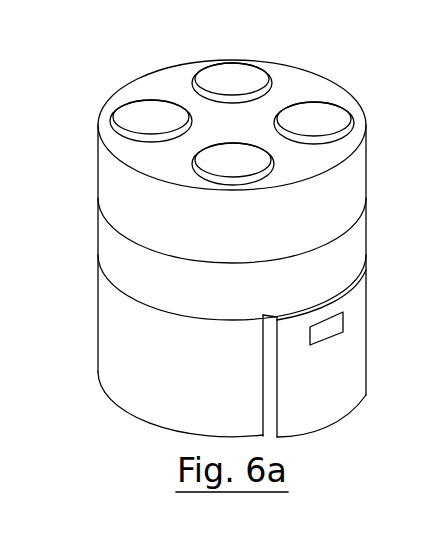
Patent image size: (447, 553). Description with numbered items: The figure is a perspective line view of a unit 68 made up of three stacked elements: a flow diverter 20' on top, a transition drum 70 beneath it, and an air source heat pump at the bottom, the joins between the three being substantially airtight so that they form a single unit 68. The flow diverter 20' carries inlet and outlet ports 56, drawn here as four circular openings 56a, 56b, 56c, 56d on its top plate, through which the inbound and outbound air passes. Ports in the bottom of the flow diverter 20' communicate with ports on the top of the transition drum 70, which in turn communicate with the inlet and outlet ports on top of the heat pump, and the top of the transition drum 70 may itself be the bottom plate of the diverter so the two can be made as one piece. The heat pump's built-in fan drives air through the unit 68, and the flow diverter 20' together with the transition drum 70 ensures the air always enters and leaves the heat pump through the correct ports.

The unit 68 is at (91, 407).
The flow diverter 20' is at (232, 230).
The transition drum 70 is at (232, 287).
The inlet and outlet ports 56 is at (431, 172).
The inlet and outlet port 56a is at (143, 120).
The inlet and outlet port 56b is at (237, 80).
The inlet and outlet port 56c is at (312, 120).
The inlet and outlet port 56d is at (217, 163).